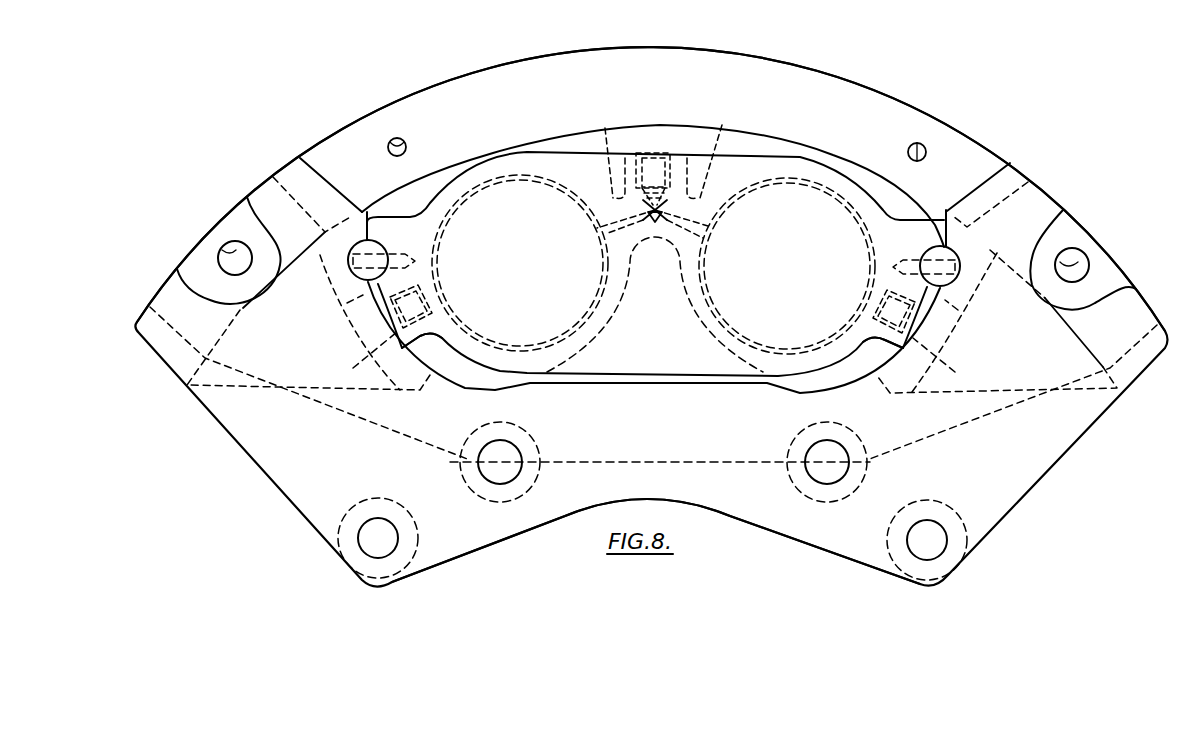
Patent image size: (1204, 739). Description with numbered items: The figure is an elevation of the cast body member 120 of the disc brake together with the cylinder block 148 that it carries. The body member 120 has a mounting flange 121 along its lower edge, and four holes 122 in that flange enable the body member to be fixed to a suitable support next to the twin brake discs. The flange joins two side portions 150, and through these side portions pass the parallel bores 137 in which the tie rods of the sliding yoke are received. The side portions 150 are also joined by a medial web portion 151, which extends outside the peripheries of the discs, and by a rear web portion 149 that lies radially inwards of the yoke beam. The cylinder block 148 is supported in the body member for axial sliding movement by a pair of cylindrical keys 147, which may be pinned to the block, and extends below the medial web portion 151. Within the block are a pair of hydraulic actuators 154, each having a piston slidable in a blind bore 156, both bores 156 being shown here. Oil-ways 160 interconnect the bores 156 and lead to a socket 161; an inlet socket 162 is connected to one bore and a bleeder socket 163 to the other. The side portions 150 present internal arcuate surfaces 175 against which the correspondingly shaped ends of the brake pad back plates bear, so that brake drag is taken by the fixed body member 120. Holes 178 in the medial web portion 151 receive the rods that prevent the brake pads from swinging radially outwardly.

The body member 120 is at (1064, 458).
The mounting flange 121 is at (820, 551).
The holes 122 is at (920, 562).
The bores 137 is at (230, 248).
The cylindrical keys 147 is at (358, 250).
The cylinder block 148 is at (866, 182).
The rear web portion 149 is at (652, 465).
The side portions 150 is at (160, 265).
The medial web portion 151 is at (907, 104).
The hydraulic actuators 154 is at (545, 263).
The blind bores 156 is at (480, 212).
The oil-ways 160 is at (606, 128).
The socket 161 is at (658, 152).
The inlet socket 162 is at (945, 354).
The bleeder socket 163 is at (368, 360).
The internal arcuate surfaces 175 is at (450, 379).
The holes 178 is at (406, 146).